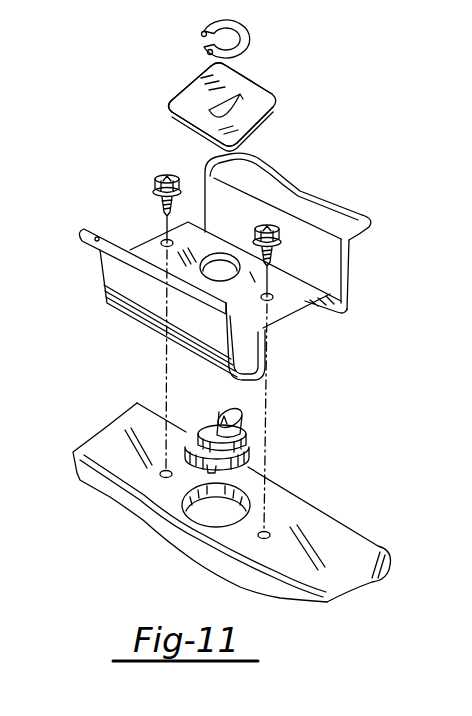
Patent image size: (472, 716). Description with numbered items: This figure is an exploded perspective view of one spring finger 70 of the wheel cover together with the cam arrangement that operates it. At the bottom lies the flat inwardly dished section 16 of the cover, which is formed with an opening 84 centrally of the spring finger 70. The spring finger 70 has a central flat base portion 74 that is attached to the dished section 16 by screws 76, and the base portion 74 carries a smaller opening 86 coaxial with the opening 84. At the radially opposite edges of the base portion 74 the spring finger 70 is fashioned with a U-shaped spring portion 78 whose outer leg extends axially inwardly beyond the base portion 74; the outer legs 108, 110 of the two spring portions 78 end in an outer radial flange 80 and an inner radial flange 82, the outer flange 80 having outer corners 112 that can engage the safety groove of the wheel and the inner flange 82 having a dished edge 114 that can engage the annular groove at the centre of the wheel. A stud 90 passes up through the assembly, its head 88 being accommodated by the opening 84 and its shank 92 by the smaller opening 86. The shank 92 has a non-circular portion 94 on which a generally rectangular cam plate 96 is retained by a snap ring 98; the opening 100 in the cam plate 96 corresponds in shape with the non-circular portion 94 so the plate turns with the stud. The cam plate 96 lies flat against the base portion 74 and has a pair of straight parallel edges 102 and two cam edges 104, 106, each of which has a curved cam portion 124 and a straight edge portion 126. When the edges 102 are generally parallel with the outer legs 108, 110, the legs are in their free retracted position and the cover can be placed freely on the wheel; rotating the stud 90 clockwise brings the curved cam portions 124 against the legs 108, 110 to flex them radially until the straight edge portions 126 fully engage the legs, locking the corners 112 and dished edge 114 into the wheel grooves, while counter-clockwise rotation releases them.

The inwardly dished section 16 is at (232, 513).
The spring finger 70 is at (238, 273).
The central flat base portion 74 is at (235, 275).
The screws 76 is at (173, 178).
The U-shaped spring portion 78 is at (337, 297).
The outer radial flange 80 is at (98, 239).
The inner radial flange 82 is at (360, 217).
The opening 84 is at (212, 507).
The smaller opening 86 is at (221, 267).
The head 88 is at (250, 466).
The stud 90 is at (251, 447).
The shank 92 is at (247, 436).
The non-circular portion 94 is at (222, 415).
The cam plate 96 is at (235, 93).
The snap ring 98 is at (255, 33).
The opening 100 is at (243, 98).
The straight parallel edges 102 is at (255, 84).
The cam edge 104 is at (278, 117).
The cam edge 106 is at (200, 76).
The outer leg 108 is at (188, 359).
The outer leg 110 is at (348, 247).
The outer corners 112 is at (173, 323).
The dished edge 114 is at (297, 190).
The curved cam portion 124 is at (172, 93).
The straight edge portion 126 is at (207, 66).